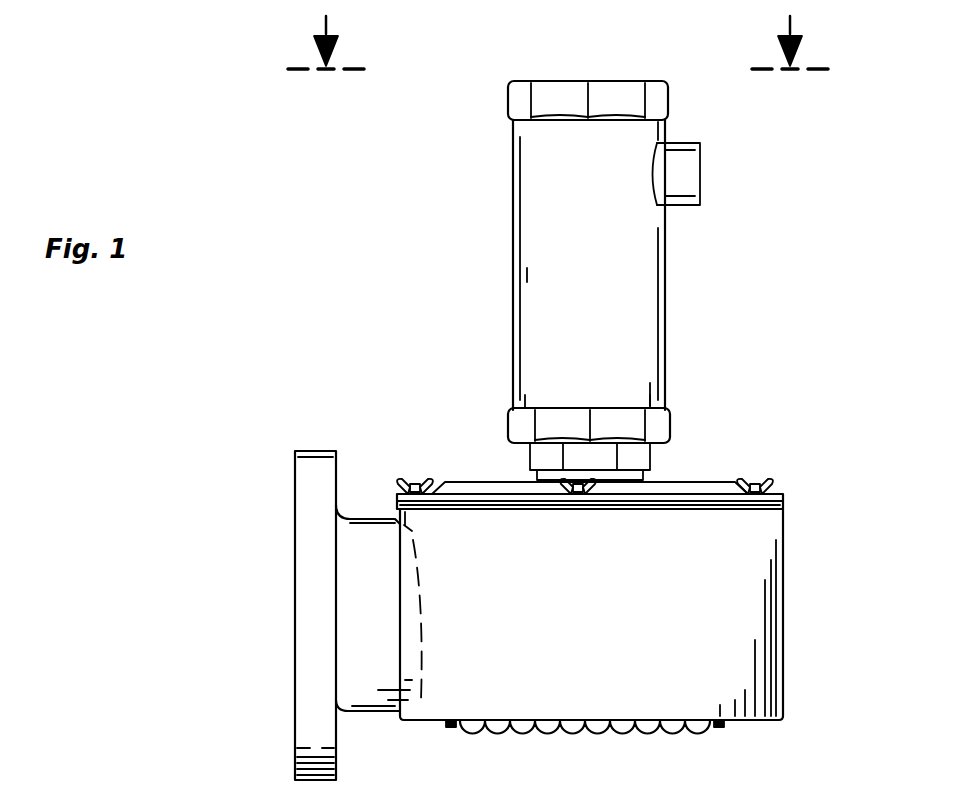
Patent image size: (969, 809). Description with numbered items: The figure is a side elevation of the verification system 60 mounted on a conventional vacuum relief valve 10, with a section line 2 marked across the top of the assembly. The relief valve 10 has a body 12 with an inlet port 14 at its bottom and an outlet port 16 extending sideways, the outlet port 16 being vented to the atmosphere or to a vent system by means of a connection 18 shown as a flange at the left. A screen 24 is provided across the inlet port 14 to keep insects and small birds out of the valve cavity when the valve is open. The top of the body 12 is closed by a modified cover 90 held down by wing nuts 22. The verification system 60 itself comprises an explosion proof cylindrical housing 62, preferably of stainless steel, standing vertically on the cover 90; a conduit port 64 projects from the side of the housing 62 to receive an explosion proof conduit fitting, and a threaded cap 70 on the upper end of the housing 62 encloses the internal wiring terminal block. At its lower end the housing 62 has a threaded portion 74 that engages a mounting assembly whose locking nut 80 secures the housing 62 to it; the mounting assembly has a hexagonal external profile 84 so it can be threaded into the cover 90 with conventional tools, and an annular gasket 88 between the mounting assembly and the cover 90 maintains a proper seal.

The section line 2- 2 is at (558, 34).
The vacuum relief valve 10 is at (832, 612).
The body 12 is at (785, 568).
The inlet port 14 is at (538, 745).
The outlet port 16 is at (292, 603).
The connection 18 is at (294, 471).
The wing nuts 22 is at (786, 480).
The screen 24 is at (582, 735).
The verification system 60 is at (728, 257).
The cylindrical housing 62 is at (515, 193).
The conduit port 64 is at (701, 172).
The threaded cap 70 is at (510, 100).
The threaded portion 74 is at (513, 410).
The locking nut 80 is at (510, 422).
The hexagonal external profile 84 is at (532, 462).
The annular gasket 88 is at (655, 477).
The modified cover 90 is at (718, 481).